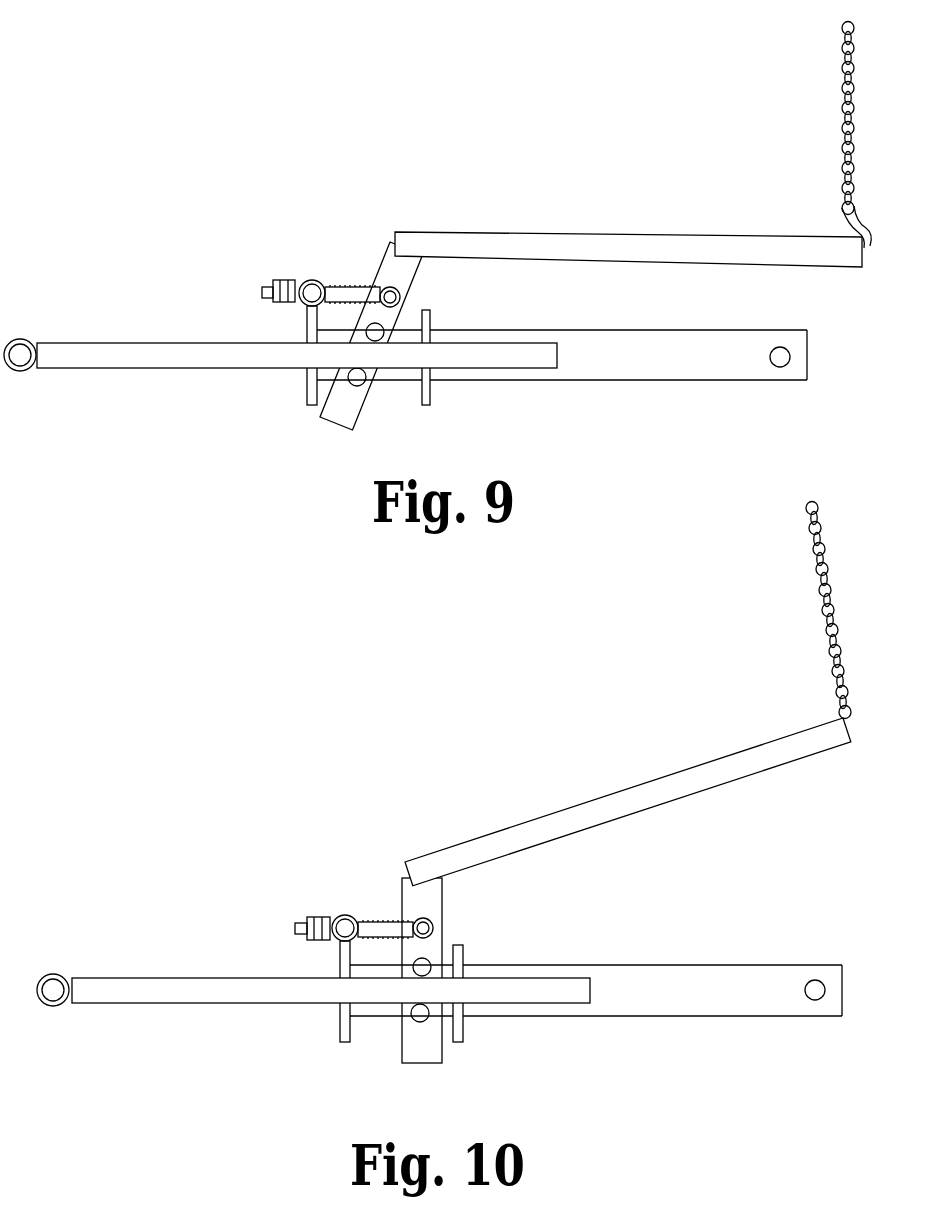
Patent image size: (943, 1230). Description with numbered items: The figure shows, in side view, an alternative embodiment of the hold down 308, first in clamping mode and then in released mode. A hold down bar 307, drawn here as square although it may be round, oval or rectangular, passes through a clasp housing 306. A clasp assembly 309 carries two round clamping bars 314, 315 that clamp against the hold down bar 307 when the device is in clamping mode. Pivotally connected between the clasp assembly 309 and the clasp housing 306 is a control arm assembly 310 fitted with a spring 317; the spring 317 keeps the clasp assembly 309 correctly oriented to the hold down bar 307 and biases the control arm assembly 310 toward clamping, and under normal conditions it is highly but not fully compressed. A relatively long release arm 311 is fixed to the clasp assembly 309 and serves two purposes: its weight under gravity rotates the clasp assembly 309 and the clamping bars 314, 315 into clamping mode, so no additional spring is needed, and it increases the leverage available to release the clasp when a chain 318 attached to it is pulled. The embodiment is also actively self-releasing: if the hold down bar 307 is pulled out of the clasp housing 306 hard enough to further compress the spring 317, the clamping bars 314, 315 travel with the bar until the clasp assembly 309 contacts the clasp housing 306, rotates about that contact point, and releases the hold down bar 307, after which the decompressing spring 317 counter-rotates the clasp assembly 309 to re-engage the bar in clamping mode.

In FIG. 9, the clasp housing 306 is at (713, 341).
In FIG. 10, the clasp housing 306 is at (745, 980).
In FIG. 9, the hold down bar 307 is at (527, 350).
In FIG. 10, the hold down bar 307 is at (560, 985).
In FIG. 9, the hold down 308 is at (298, 172).
In FIG. 10, the hold down 308 is at (306, 778).
In FIG. 9, the clasp assembly 309 is at (430, 276).
In FIG. 10, the clasp assembly 309 is at (458, 897).
In FIG. 9, the control arm assembly 310 is at (286, 257).
In FIG. 10, the control arm assembly 310 is at (318, 888).
In FIG. 9, the release arm 311 is at (655, 245).
In FIG. 10, the release arm 311 is at (578, 818).
In FIG. 9, the round clamping bar 314 is at (360, 378).
In FIG. 10, the round clamping bar 314 is at (423, 1015).
In FIG. 9, the round clamping bar 315 is at (383, 330).
In FIG. 10, the round clamping bar 315 is at (429, 963).
In FIG. 9, the spring 317 is at (347, 285).
In FIG. 10, the spring 317 is at (378, 920).
In FIG. 9, the chain 318 is at (842, 78).
In FIG. 10, the chain 318 is at (816, 565).